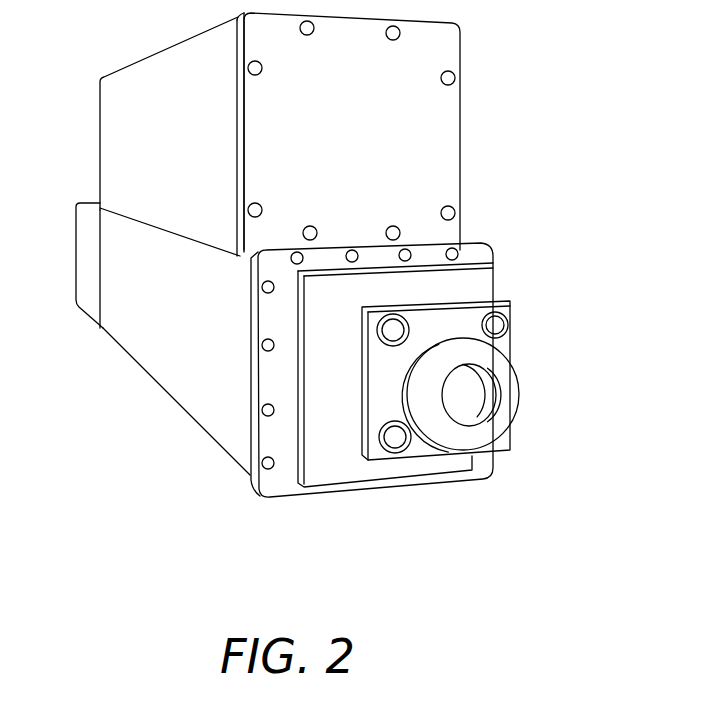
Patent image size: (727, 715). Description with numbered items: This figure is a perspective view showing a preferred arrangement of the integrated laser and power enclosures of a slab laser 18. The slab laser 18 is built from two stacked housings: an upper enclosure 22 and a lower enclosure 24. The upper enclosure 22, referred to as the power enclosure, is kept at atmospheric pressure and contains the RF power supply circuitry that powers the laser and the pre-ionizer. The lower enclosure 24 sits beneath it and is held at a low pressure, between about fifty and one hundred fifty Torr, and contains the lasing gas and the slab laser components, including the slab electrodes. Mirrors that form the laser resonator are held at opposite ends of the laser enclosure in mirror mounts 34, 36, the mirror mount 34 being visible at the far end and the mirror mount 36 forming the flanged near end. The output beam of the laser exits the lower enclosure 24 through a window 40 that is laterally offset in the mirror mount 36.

The slab laser 18 is at (299, 304).
The upper enclosure 22 is at (118, 78).
The lower enclosure 24 is at (118, 340).
The mirror mount 34 is at (80, 263).
The mirror mount 36 is at (493, 281).
The window 40 is at (447, 393).